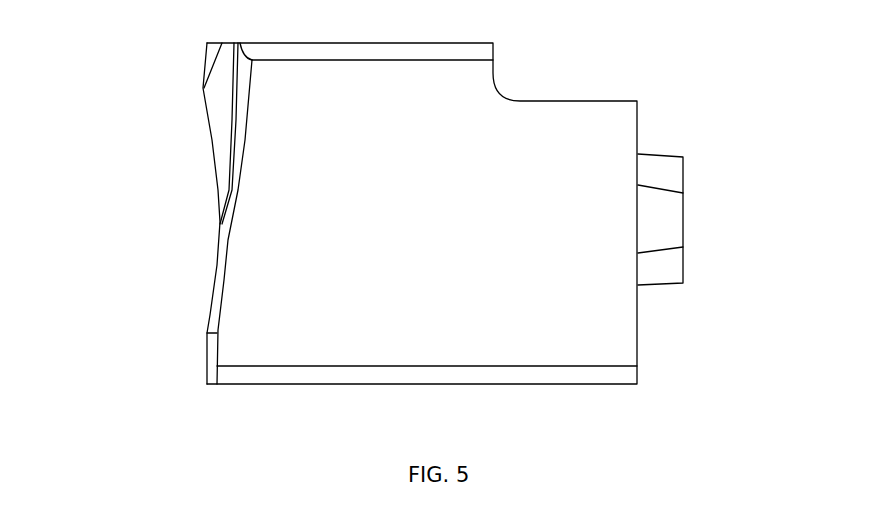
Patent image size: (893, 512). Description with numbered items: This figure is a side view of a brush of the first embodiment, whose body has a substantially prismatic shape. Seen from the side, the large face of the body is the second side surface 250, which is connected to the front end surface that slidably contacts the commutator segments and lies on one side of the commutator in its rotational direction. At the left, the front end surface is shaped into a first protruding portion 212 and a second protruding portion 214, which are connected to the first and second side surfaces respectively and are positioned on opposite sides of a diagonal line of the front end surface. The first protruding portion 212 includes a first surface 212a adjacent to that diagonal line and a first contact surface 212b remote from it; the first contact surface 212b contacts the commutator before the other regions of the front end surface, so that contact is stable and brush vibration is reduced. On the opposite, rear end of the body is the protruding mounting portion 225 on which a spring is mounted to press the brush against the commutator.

The first protruding portion 212 is at (140, 133).
The first surface 212a is at (215, 117).
The first contact surface 212b is at (208, 60).
The second protruding portion 214 is at (210, 350).
The protruding mounting portion 225 is at (658, 202).
The second side surface 250 is at (565, 272).